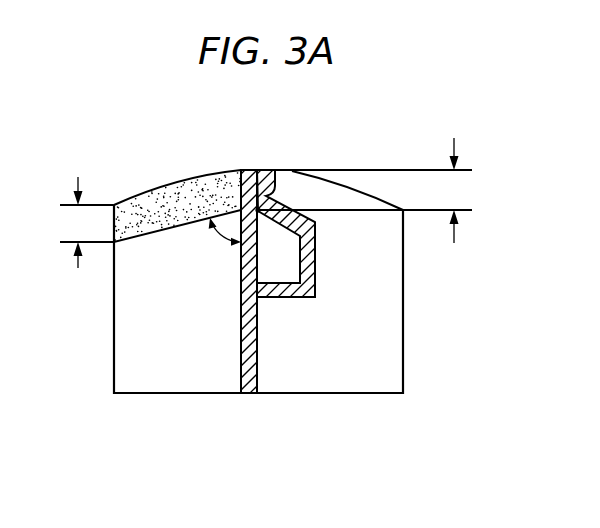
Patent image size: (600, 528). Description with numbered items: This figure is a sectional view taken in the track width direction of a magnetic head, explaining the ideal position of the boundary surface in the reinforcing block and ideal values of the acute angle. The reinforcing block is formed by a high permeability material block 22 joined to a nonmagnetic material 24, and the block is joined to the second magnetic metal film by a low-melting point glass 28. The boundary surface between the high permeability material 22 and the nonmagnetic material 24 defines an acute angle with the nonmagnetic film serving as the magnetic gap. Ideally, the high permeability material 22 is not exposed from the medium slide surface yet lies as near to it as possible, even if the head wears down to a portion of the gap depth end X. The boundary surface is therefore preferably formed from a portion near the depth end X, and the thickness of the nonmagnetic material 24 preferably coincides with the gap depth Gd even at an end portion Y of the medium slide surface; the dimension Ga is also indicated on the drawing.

The high permeability material block 22 is at (169, 382).
The nonmagnetic material 24 is at (187, 192).
The low-melting point glass 28 is at (241, 169).
The gap depth end X is at (277, 193).
The end portion of the medium slide surface Y is at (113, 204).
The gap dimension a Ga is at (81, 222).
The gap depth Gd is at (467, 190).